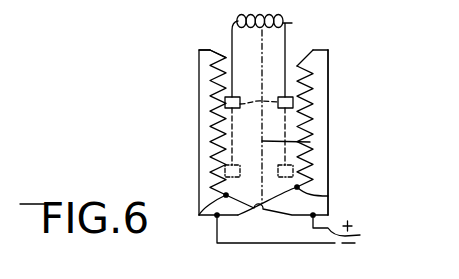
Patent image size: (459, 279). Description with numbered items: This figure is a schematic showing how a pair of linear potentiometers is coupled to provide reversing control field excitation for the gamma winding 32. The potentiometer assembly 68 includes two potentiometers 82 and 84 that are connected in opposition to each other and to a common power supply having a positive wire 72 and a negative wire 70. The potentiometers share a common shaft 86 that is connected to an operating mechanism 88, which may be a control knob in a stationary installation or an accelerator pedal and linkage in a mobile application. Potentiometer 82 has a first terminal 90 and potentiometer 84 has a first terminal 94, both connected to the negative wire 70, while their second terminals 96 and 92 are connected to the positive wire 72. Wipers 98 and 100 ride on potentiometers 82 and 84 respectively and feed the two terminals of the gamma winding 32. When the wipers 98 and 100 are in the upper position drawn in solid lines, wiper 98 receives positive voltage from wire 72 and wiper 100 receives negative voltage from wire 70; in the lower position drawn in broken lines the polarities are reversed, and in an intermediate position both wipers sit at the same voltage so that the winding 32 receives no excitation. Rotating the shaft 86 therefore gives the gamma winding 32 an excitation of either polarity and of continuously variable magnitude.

The gamma winding 32 is at (292, 23).
The potentiometer assembly 68 is at (320, 43).
The wire 70 is at (250, 244).
The wire 72 is at (360, 235).
The potentiometer 82 is at (316, 123).
The potentiometer 84 is at (204, 130).
The common shaft 86 is at (226, 110).
The operating mechanism 88 is at (310, 142).
The first terminal 90 is at (310, 60).
The second terminal 92 is at (299, 190).
The first terminal 94 is at (209, 55).
The second terminal 96 is at (199, 215).
The wiper 98 is at (293, 102).
The wiper 100 is at (233, 94).